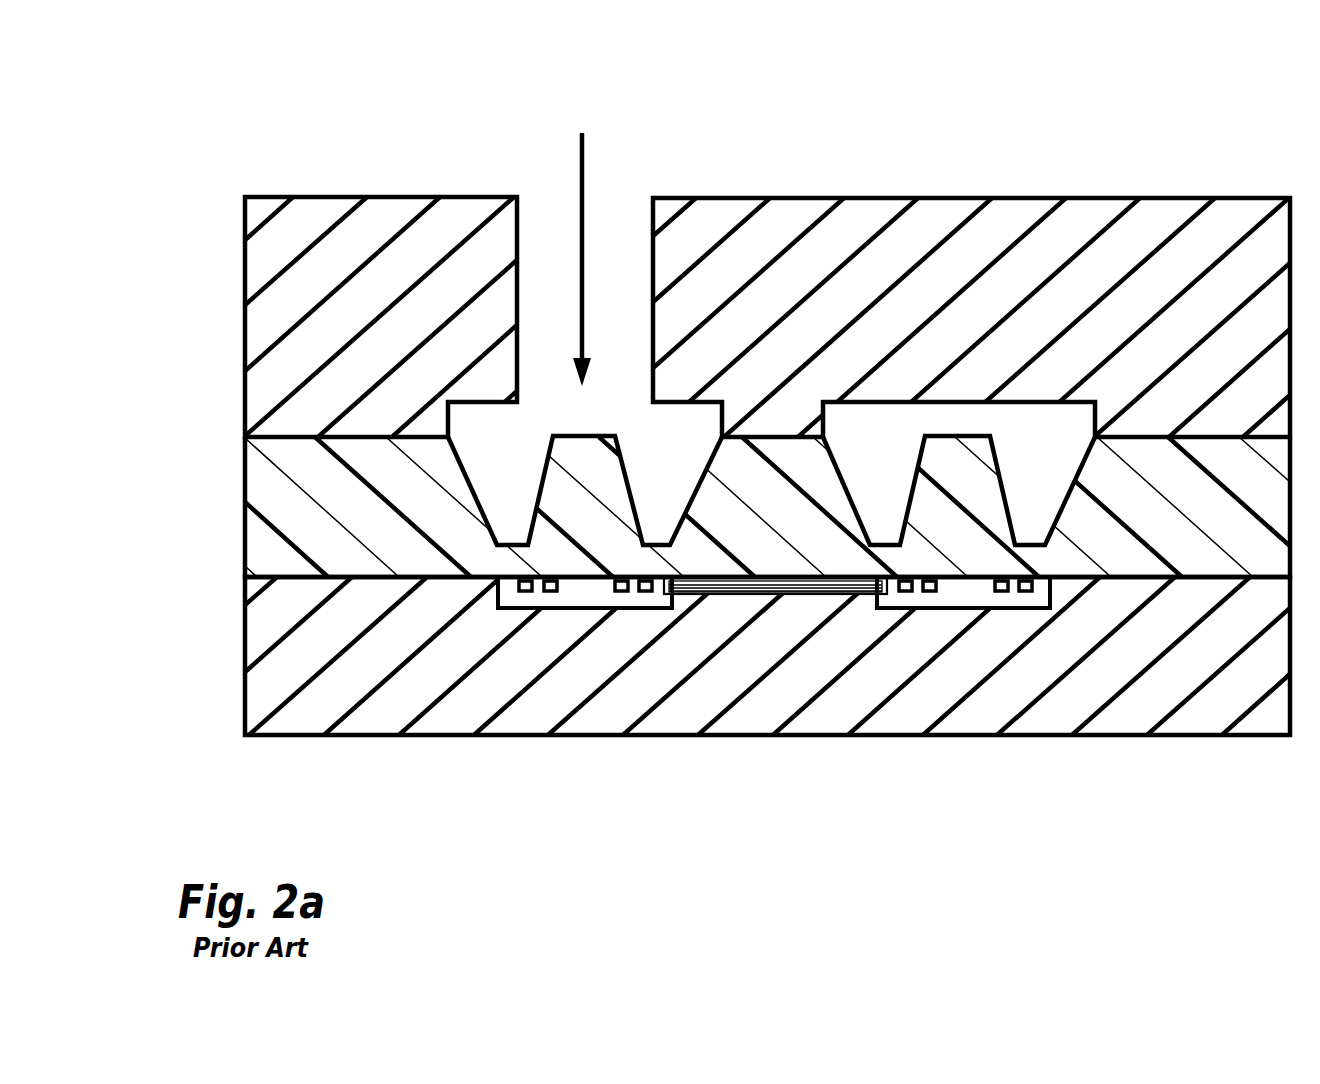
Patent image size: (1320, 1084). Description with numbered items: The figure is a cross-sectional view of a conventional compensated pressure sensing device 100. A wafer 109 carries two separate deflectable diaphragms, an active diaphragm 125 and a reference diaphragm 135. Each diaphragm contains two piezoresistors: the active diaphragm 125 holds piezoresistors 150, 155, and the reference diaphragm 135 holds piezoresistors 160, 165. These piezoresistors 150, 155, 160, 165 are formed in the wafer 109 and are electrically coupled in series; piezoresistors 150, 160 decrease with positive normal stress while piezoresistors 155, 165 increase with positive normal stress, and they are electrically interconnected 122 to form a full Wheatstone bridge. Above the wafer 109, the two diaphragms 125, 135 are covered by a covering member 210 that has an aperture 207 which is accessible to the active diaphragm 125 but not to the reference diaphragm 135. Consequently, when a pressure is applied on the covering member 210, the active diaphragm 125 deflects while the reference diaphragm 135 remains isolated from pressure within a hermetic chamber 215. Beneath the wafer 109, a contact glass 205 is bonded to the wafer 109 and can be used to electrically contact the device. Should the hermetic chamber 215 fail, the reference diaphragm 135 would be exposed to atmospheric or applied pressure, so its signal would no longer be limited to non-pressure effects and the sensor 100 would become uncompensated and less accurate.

The compensated pressure sensing device 100 is at (286, 116).
The covering member 210 is at (243, 255).
The aperture 207 is at (616, 202).
The hermetic chamber 215 is at (867, 452).
The wafer 109 is at (243, 501).
The active diaphragm 125 is at (608, 478).
The reference diaphragm 135 is at (981, 493).
The contact glass 205 is at (243, 650).
The piezoresistor 150 is at (525, 593).
The piezoresistor 155 is at (622, 593).
The piezoresistor 160 is at (905, 593).
The piezoresistor 165 is at (1001, 593).
The electrical interconnection 122 is at (777, 594).